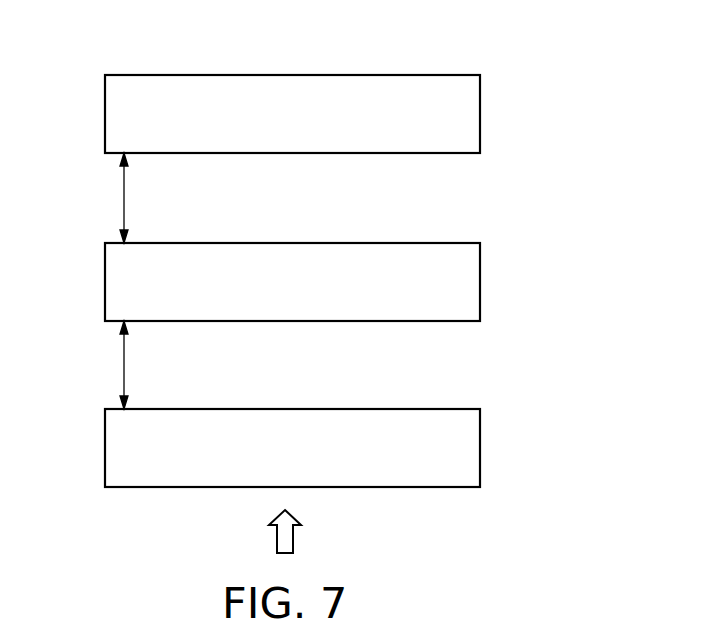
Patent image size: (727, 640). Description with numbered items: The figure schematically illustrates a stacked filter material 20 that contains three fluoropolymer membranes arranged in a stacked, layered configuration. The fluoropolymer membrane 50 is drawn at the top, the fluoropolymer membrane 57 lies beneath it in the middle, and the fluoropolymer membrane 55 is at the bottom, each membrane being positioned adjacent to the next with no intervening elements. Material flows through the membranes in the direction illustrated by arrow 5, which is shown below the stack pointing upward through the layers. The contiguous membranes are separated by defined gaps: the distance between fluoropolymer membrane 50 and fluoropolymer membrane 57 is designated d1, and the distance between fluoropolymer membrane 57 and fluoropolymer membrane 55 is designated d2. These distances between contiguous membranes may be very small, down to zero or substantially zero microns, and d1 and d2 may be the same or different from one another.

The stacked filter material 20 is at (487, 42).
The fluoropolymer membrane 50 is at (480, 112).
The fluoropolymer membrane 57 is at (480, 288).
The fluoropolymer membrane 55 is at (481, 458).
The arrow 5 is at (293, 547).
The distance between fluoropolymer membranes 50 and 57 d1 is at (124, 196).
The distance between fluoropolymer membranes 57 and 55 d2 is at (124, 372).